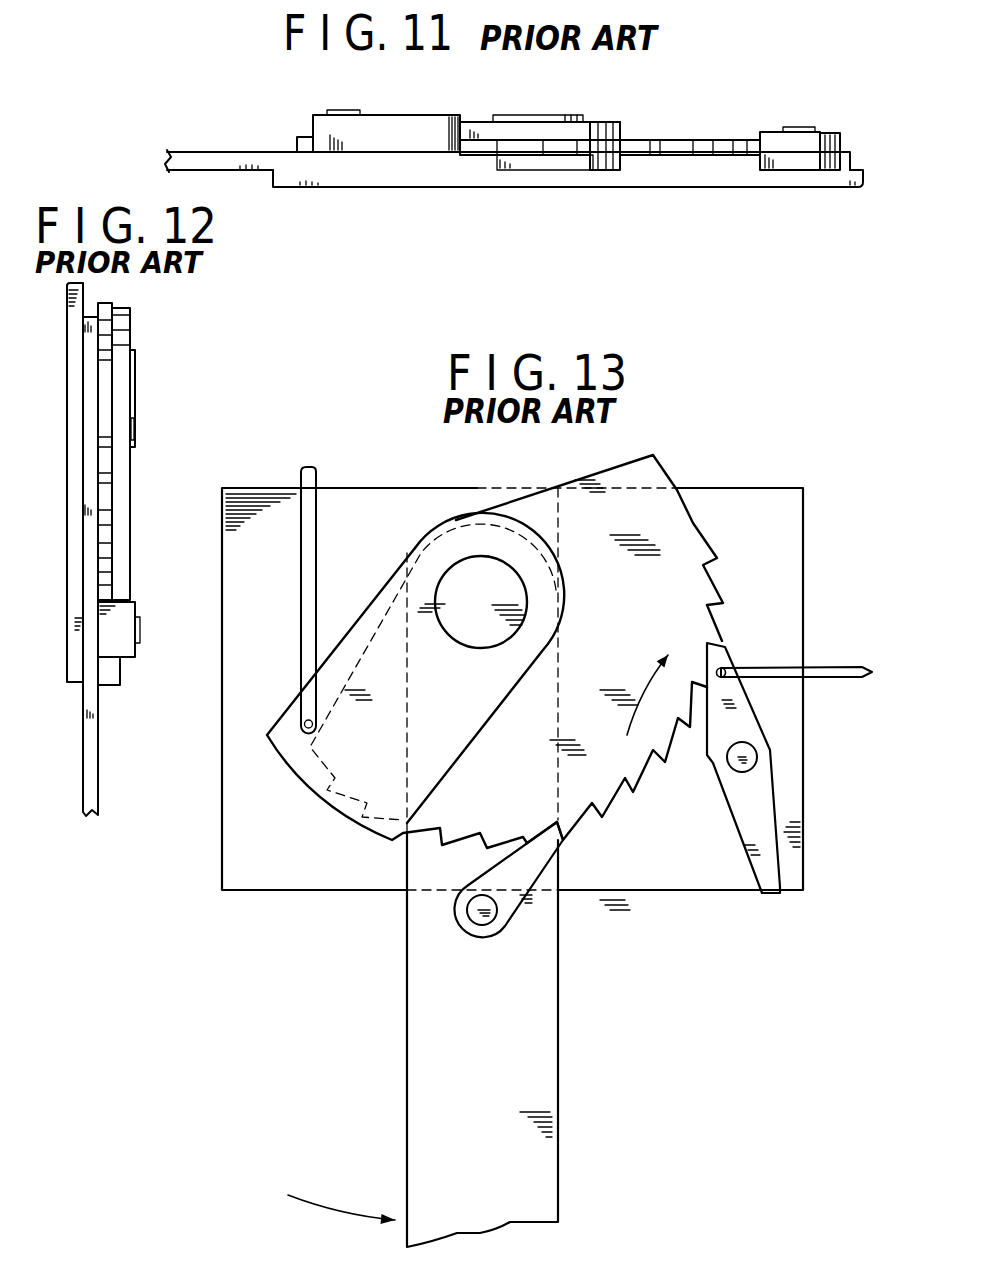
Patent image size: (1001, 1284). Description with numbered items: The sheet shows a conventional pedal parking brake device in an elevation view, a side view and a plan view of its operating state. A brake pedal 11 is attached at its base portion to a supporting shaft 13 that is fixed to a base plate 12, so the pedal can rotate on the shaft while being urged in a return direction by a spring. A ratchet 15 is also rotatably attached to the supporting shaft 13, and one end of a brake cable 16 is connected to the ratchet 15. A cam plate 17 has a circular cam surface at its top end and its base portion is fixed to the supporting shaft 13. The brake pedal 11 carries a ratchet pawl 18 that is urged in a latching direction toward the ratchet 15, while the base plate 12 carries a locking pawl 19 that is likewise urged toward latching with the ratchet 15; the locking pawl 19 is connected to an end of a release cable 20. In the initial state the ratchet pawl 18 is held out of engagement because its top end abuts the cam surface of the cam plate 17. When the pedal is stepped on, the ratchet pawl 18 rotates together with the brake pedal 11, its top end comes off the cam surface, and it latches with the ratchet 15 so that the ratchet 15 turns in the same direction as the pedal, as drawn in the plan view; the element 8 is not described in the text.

In FIG. 13, the pawl 8 is at (562, 840).
In FIG. 11, the brake pedal 11 is at (249, 152).
In FIG. 12, the brake pedal 11 is at (98, 762).
In FIG. 13, the brake pedal 11 is at (550, 1052).
In FIG. 11, the base plate 12 is at (645, 182).
In FIG. 12, the base plate 12 is at (72, 498).
In FIG. 13, the base plate 12 is at (790, 590).
In FIG. 11, the supporting shaft 13 is at (555, 120).
In FIG. 12, the supporting shaft 13 is at (135, 377).
In FIG. 13, the supporting shaft 13 is at (468, 577).
In FIG. 11, the ratchet 15 is at (682, 147).
In FIG. 12, the ratchet 15 is at (113, 567).
In FIG. 13, the ratchet 15 is at (613, 797).
In FIG. 13, the brake cable 16 is at (317, 493).
In FIG. 11, the cam plate 17 is at (608, 123).
In FIG. 12, the cam plate 17 is at (127, 487).
In FIG. 13, the cam plate 17 is at (348, 817).
In FIG. 11, the ratchet pawl 18 is at (417, 128).
In FIG. 12, the ratchet pawl 18 is at (125, 657).
In FIG. 11, the locking pawl 19 is at (775, 143).
In FIG. 13, the locking pawl 19 is at (762, 800).
In FIG. 13, the release cable 20 is at (850, 645).